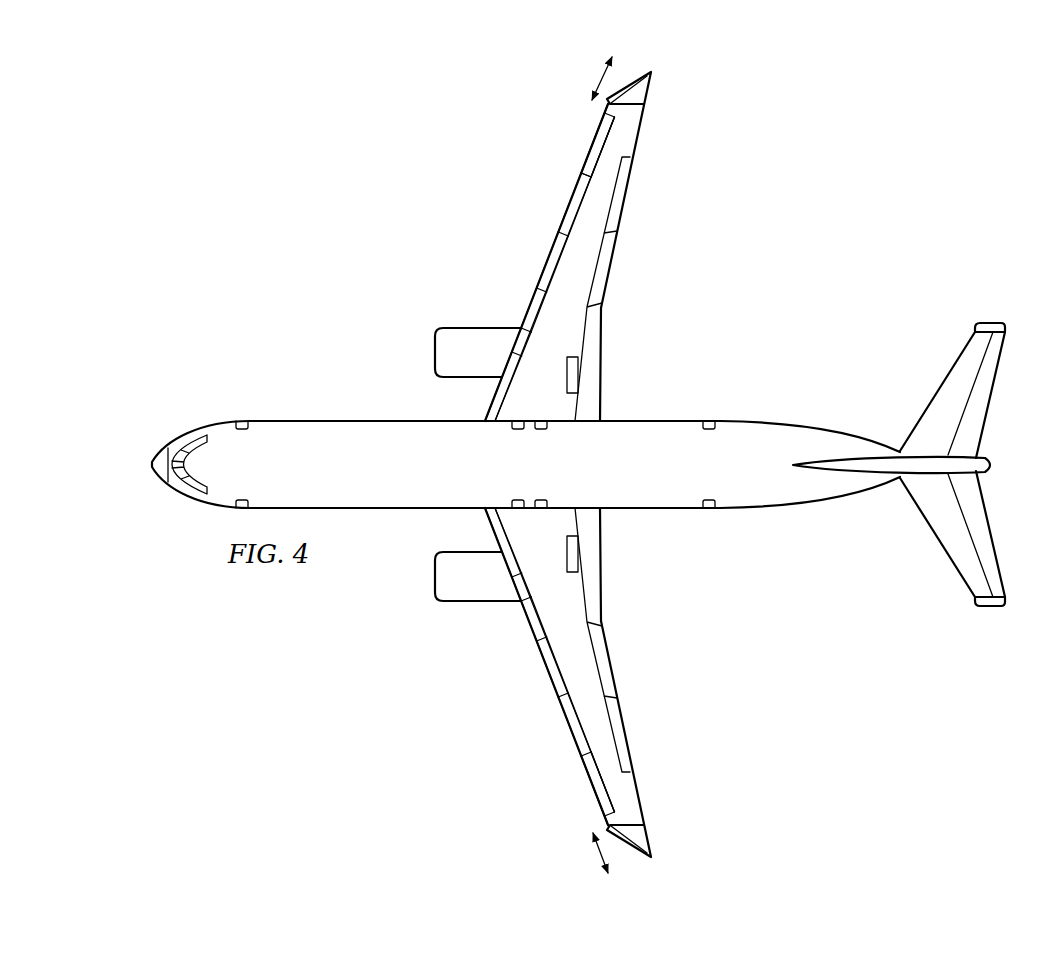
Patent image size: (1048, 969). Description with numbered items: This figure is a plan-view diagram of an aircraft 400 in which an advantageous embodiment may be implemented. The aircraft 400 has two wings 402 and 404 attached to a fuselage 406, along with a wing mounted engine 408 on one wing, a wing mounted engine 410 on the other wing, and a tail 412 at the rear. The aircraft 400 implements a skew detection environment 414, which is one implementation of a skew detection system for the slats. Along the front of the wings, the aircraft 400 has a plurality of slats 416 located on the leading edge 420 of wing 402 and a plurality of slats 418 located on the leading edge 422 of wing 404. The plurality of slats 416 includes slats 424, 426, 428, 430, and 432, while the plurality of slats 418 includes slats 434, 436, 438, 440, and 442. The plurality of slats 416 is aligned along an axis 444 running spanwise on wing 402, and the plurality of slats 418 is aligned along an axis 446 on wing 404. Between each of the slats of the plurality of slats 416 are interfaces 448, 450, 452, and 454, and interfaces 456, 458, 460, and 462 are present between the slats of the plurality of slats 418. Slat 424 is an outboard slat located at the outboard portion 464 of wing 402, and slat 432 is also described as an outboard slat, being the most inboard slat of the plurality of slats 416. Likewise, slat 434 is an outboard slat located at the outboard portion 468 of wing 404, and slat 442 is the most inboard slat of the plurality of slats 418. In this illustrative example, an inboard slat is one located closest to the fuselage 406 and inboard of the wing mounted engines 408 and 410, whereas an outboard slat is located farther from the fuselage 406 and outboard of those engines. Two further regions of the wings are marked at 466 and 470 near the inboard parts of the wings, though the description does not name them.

The aircraft 400 is at (291, 185).
The wing 402 is at (655, 73).
The wing 404 is at (655, 858).
The fuselage 406 is at (303, 421).
The wing mounted engine 408 is at (435, 350).
The wing mounted engine 410 is at (436, 578).
The tail 412 is at (943, 548).
The skew detection environment 414 is at (556, 332).
The plurality of slats 416 is at (470, 203).
The plurality of slats 418 is at (468, 738).
The leading edge 420 is at (601, 118).
The leading edge 422 is at (600, 807).
The slat 424 is at (594, 142).
The slat 426 is at (570, 200).
The slat 428 is at (547, 260).
The slat 430 is at (528, 310).
The slat 432 is at (522, 352).
The slat 434 is at (593, 787).
The slat 436 is at (570, 728).
The slat 438 is at (547, 668).
The slat 440 is at (527, 618).
The slat 442 is at (522, 582).
The axis 444 is at (597, 78).
The axis 446 is at (600, 853).
The interface 448 is at (580, 175).
The interface 450 is at (558, 232).
The interface 452 is at (536, 288).
The interface 454 is at (514, 345).
The interface 456 is at (581, 756).
The interface 458 is at (558, 697).
The interface 460 is at (537, 640).
The interface 462 is at (514, 584).
The outboard portion 464 is at (507, 107).
The inboard wing region 466 is at (417, 286).
The outboard portion 468 is at (507, 828).
The inboard wing region 470 is at (473, 540).